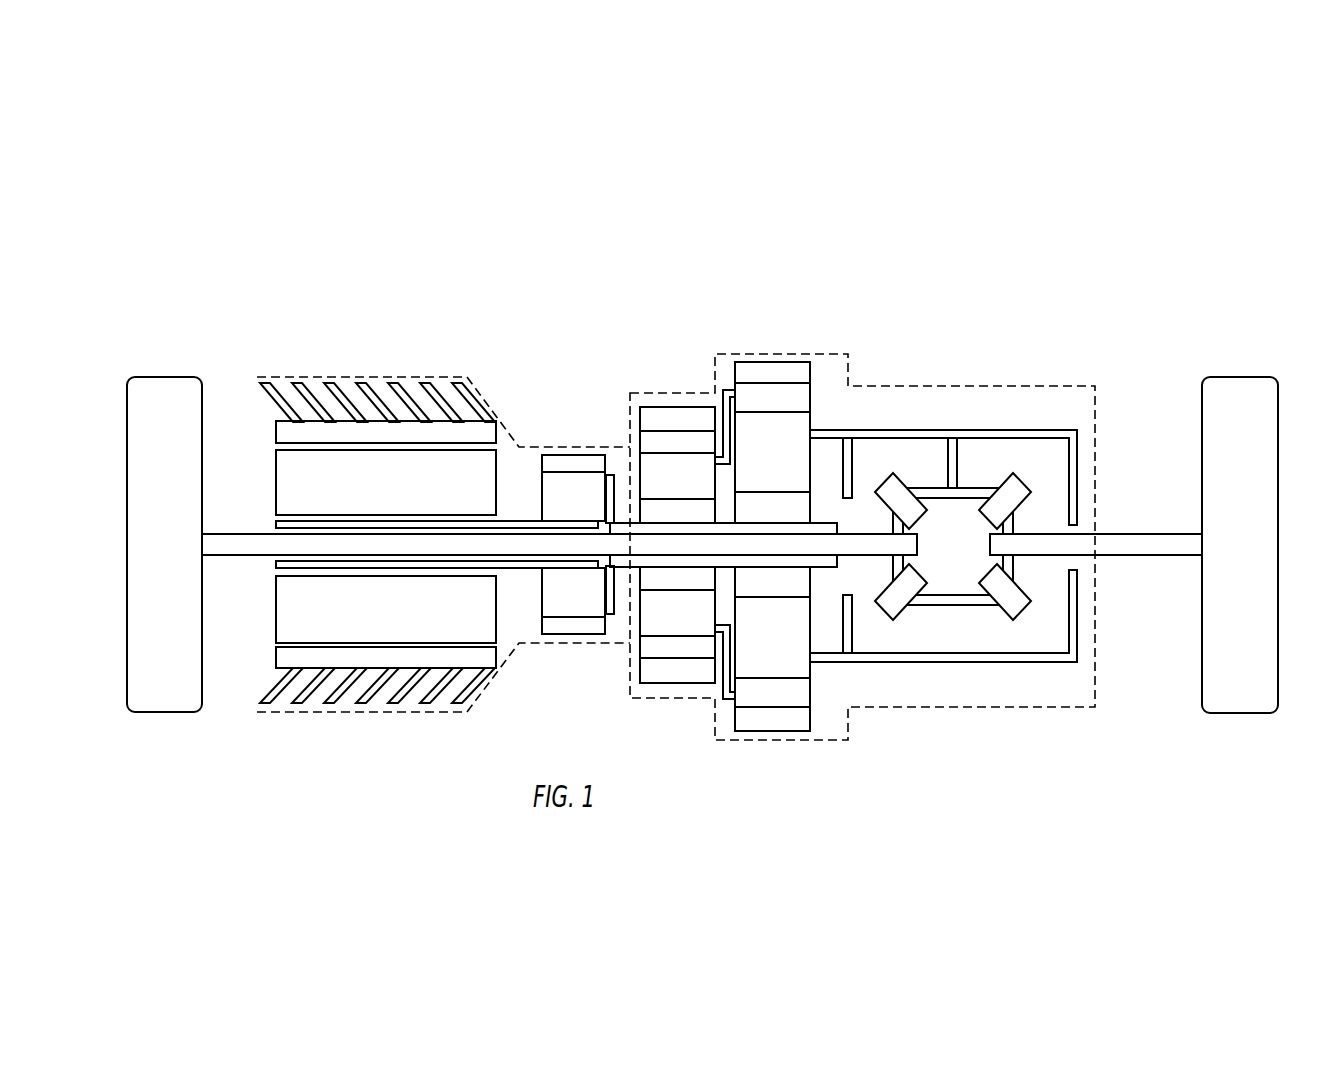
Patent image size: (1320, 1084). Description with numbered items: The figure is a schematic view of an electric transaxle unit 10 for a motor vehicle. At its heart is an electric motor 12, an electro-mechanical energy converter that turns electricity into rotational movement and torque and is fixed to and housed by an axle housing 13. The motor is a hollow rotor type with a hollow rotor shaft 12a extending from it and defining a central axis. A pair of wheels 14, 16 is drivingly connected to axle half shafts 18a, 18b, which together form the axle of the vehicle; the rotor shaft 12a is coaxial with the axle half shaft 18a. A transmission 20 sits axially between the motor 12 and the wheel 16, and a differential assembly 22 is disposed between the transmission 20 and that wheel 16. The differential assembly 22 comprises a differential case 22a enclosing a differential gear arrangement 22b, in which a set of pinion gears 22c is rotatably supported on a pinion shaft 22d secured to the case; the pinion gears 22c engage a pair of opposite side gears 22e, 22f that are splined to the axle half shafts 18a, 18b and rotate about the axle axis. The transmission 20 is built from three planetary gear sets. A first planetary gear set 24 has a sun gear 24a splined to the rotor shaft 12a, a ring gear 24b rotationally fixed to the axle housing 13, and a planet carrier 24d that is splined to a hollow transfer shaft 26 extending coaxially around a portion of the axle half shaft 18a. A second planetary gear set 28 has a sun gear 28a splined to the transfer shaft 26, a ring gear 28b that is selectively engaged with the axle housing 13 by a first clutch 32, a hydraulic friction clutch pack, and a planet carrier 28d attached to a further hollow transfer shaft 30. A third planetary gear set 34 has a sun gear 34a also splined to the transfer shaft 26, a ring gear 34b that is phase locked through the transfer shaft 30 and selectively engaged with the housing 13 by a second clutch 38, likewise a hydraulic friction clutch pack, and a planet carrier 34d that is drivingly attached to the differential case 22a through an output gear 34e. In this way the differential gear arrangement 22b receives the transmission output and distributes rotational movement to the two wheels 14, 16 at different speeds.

The electric transaxle unit 10 is at (1108, 203).
The electric motor 12 is at (361, 370).
The rotor shaft 12a is at (508, 520).
The axle housing 13 is at (268, 375).
The wheel 14 is at (160, 375).
The wheel 16 is at (1238, 376).
The axle half shaft 18a is at (235, 533).
The axle half shaft 18b is at (1133, 533).
The transmission 20 is at (778, 262).
The differential assembly 22 is at (954, 375).
The differential case 22a is at (872, 430).
The differential gear arrangement 22b is at (977, 687).
The pinion gears 22c is at (975, 487).
The pinion shaft 22d is at (960, 458).
The side gear 22e is at (893, 568).
The side gear 22f is at (1013, 570).
The first planetary gear set 24 is at (557, 442).
The sun gear 24a is at (583, 517).
The ring gear 24b is at (576, 628).
The planet carrier 24d is at (558, 600).
The transfer shaft 26 is at (622, 518).
The second planetary gear set 28 is at (661, 365).
The sun gear 28a is at (652, 512).
The ring gear 28b is at (672, 648).
The planet carrier 28d is at (677, 472).
The transfer shaft 30 is at (728, 702).
The first clutch 32 is at (653, 683).
The third planetary gear set 34 is at (748, 343).
The sun gear 34a is at (758, 588).
The ring gear 34b is at (780, 402).
The planet carrier 34d is at (798, 662).
The output gear 34e is at (830, 430).
The second clutch 38 is at (778, 733).